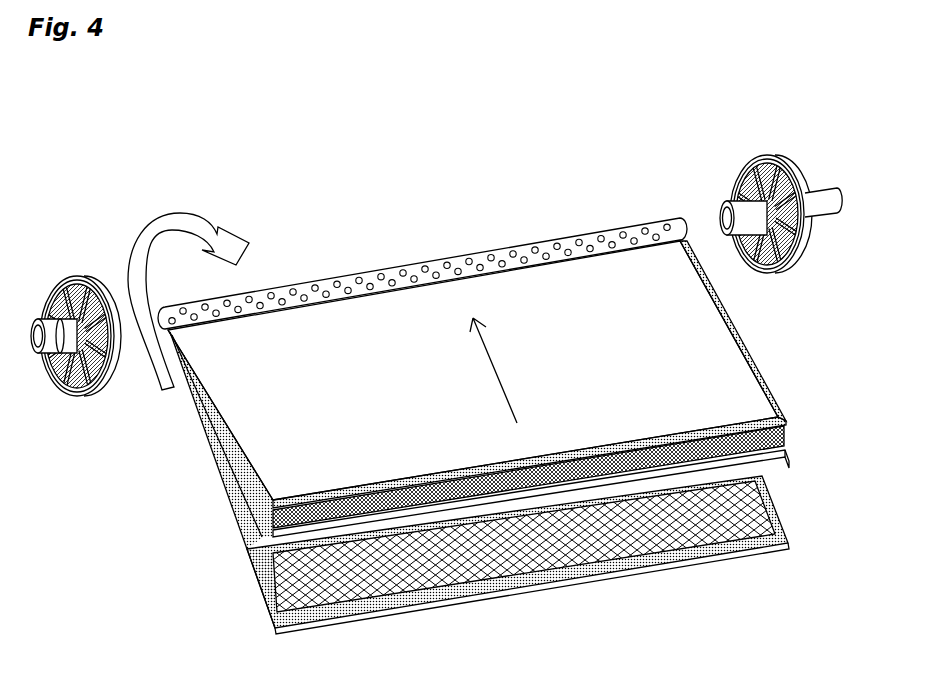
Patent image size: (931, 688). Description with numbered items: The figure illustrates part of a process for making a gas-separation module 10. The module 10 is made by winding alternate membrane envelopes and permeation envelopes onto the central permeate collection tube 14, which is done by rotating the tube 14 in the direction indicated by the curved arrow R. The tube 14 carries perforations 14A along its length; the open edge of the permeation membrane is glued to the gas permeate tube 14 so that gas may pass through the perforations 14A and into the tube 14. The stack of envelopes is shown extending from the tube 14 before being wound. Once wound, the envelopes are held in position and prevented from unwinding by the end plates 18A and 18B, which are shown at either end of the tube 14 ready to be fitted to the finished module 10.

The gas-separation module 10 is at (787, 109).
The central permeate collection tube 14 is at (452, 257).
The perforations 14A is at (573, 240).
The end plate 18A is at (82, 398).
The end plate 18B is at (766, 274).
The curved arrow indicating direction of rotation R is at (165, 218).